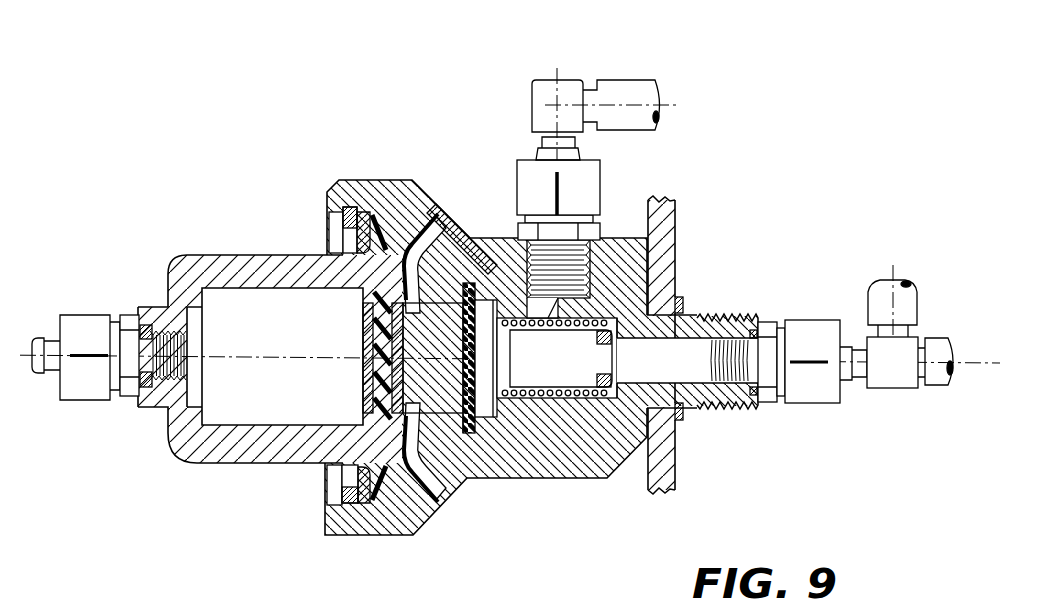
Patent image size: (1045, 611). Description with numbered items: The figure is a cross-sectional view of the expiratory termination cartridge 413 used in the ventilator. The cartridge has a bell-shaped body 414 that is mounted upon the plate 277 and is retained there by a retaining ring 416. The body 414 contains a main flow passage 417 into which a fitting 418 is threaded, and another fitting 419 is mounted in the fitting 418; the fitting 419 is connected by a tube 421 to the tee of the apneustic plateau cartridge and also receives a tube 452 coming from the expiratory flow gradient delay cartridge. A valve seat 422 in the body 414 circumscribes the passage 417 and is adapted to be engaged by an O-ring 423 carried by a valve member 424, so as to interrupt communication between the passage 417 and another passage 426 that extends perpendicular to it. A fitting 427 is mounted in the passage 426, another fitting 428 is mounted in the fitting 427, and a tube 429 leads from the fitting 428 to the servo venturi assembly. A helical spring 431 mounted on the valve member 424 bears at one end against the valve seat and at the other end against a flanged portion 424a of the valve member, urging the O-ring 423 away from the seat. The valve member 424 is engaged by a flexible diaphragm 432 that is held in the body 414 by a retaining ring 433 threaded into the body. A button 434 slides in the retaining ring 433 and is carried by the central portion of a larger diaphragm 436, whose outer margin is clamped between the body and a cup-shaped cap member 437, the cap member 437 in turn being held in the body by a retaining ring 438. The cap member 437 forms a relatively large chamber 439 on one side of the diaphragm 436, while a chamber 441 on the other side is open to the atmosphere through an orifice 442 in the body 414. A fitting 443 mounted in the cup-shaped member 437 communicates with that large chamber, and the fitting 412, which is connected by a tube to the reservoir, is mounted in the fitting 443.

The fitting 412 is at (50, 343).
The fitting 443 is at (131, 395).
The chamber 439 is at (213, 410).
The cup-shaped cap member 437 is at (230, 467).
The retaining ring 438 is at (352, 510).
The larger diaphragm 436 is at (370, 387).
The button 434 is at (395, 323).
The orifice 442 is at (442, 211).
The chamber 441 is at (452, 268).
The flexible diaphragm 432 is at (478, 425).
The retaining ring 433 is at (438, 430).
The flanged portion 424a is at (492, 407).
The valve member 424 is at (567, 373).
The bell-shaped body 414 is at (548, 480).
The expiratory termination cartridge 413 is at (573, 481).
The O-ring 423 is at (627, 470).
The retaining ring 416 is at (675, 347).
The main flow passage 417 is at (695, 323).
The fitting 418 is at (768, 323).
The fitting 419 is at (883, 380).
The tube 421 is at (875, 298).
The tube 452 is at (937, 343).
The passage 426 is at (532, 297).
The valve seat 422 is at (638, 318).
The helical spring 431 is at (560, 317).
The fitting 427 is at (600, 228).
The fitting 428 is at (542, 88).
The tube 429 is at (626, 92).
The plate 277 is at (667, 473).